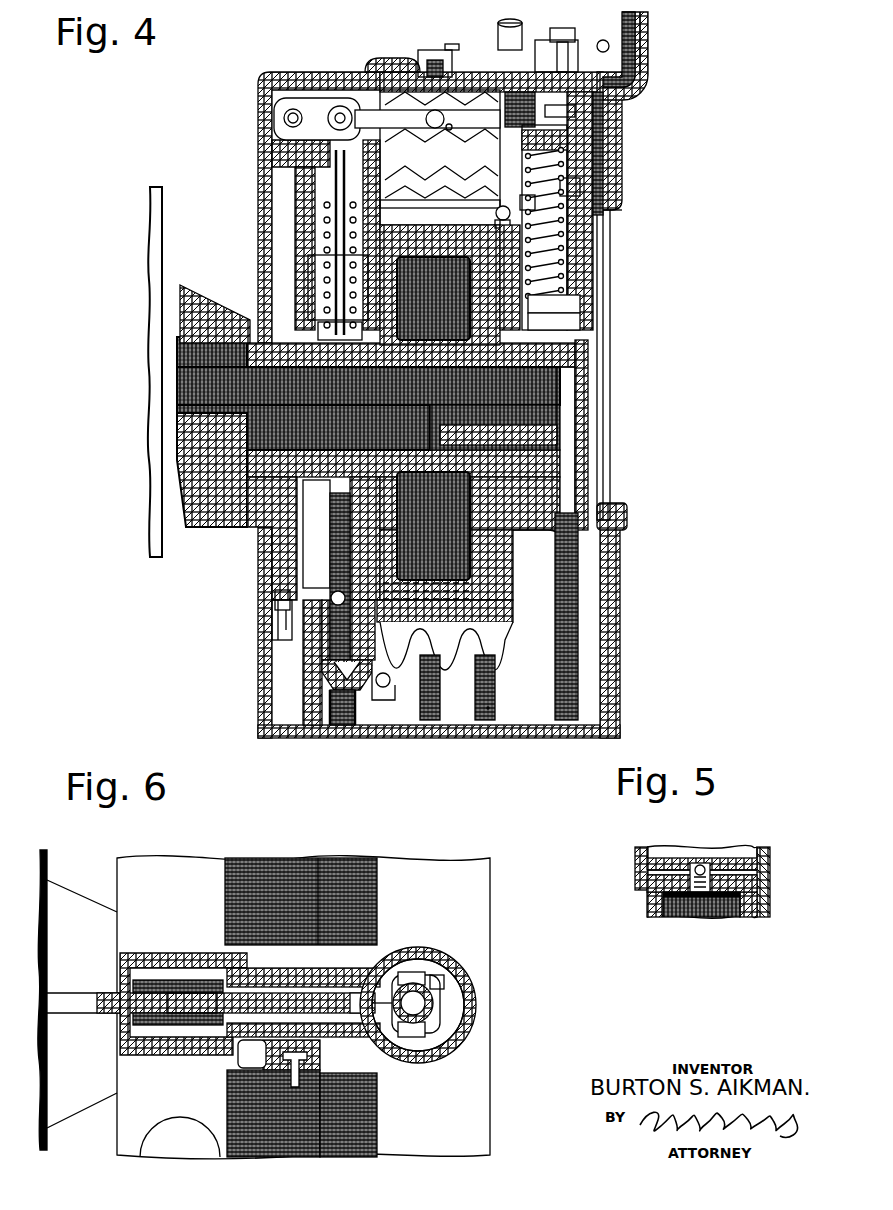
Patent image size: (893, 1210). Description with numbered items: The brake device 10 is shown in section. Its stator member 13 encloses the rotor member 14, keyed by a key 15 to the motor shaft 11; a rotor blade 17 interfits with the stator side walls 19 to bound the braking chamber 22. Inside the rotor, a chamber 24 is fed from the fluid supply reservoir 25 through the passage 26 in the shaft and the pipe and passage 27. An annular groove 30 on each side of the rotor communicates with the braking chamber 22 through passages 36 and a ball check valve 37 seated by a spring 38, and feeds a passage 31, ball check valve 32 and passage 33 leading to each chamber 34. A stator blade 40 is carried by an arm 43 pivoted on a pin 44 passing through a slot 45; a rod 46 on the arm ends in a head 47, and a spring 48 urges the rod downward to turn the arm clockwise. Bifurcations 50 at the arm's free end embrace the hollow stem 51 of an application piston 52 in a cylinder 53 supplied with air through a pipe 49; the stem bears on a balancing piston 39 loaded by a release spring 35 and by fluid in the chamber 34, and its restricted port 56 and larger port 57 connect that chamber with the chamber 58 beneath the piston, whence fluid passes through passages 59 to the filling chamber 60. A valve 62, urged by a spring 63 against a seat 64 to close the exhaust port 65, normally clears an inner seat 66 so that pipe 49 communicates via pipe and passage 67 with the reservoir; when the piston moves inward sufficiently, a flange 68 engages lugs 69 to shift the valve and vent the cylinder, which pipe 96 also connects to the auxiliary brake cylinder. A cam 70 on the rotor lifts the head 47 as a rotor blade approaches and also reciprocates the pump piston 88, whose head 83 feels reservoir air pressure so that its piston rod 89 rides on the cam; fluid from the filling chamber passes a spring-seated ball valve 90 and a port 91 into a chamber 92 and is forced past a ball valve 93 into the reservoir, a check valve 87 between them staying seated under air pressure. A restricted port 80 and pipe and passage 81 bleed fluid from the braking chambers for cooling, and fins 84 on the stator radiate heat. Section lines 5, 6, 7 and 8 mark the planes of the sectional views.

In FIG. 4, the brake device 10 is at (622, 643).
In FIG. 4, the shaft 11 is at (237, 400).
In FIG. 5, the stator member 13 is at (760, 850).
In FIG. 5, the rotor member 14 is at (745, 922).
In FIG. 4, the key 15 is at (437, 372).
In FIG. 4, the rotor blade 17 is at (390, 194).
In FIG. 4, the side walls 19 is at (390, 176).
In FIG. 5, the braking chamber 22 is at (660, 850).
In FIG. 4, the rotor chamber 24 is at (452, 508).
In FIG. 5, the rotor chamber 24 is at (697, 903).
In FIG. 4, the fluid supply reservoir 25 is at (488, 708).
In FIG. 4, the passage 26 is at (532, 418).
In FIG. 4, the pipe and passage 27 is at (597, 507).
In FIG. 4, the annular groove 30 is at (382, 233).
In FIG. 5, the annular groove 30 is at (647, 872).
In FIG. 4, the passage 31 is at (556, 268).
In FIG. 4, the ball check valve 32 is at (497, 219).
In FIG. 4, the passage 33 is at (531, 306).
In FIG. 4, the chamber 34 is at (565, 318).
In FIG. 4, the release spring 35 is at (520, 250).
In FIG. 5, the passages 36 is at (722, 870).
In FIG. 5, the ball check valve 37 is at (690, 883).
In FIG. 5, the spring 38 is at (697, 895).
In FIG. 4, the balancing piston 39 is at (580, 188).
In FIG. 6, the balancing piston 39 is at (440, 980).
In FIG. 4, the stator blade 40 is at (452, 36).
In FIG. 6, the stator blade 40 is at (366, 1030).
In FIG. 4, the arm 43 is at (387, 118).
In FIG. 6, the arm 43 is at (258, 985).
In FIG. 4, the pin 44 is at (293, 109).
In FIG. 4, the slot 45 is at (330, 108).
In FIG. 4, the rod 46 is at (272, 152).
In FIG. 6, the rod 46 is at (197, 1038).
In FIG. 4, the head 47 is at (322, 328).
In FIG. 4, the spring 48 is at (320, 207).
In FIG. 4, the pipe 49 is at (458, 44).
In FIG. 4, the bifurcations 50 is at (548, 152).
In FIG. 6, the bifurcations 50 is at (433, 1003).
In FIG. 4, the hollow stem 51 is at (575, 112).
In FIG. 6, the hollow stem 51 is at (392, 1024).
In FIG. 4, the application piston 52 is at (585, 95).
In FIG. 6, the cylinder 53 is at (436, 947).
In FIG. 4, the restricted port 56 is at (437, 128).
In FIG. 4, the larger port 57 is at (527, 202).
In FIG. 4, the chamber 58 is at (580, 135).
In FIG. 6, the chamber 58 is at (448, 1032).
In FIG. 6, the passages 59 is at (275, 985).
In FIG. 4, the filling chamber 60 is at (313, 270).
In FIG. 4, the valve 62 is at (648, 16).
In FIG. 4, the spring 63 is at (601, 100).
In FIG. 4, the seat 64 is at (553, 60).
In FIG. 4, the exhaust port 65 is at (552, 42).
In FIG. 4, the inner seat 66 is at (506, 23).
In FIG. 4, the pipe and passage 67 is at (650, 40).
In FIG. 4, the flange 68 is at (503, 90).
In FIG. 4, the lugs 69 is at (609, 46).
In FIG. 4, the cam 70 is at (337, 528).
In FIG. 4, the restricted port 80 is at (408, 57).
In FIG. 6, the pipe and passage 81 is at (277, 1088).
In FIG. 4, the head 83 is at (340, 712).
In FIG. 4, the fins 84 is at (430, 662).
In FIG. 6, the fins 84 is at (247, 860).
In FIG. 4, the check valve 87 is at (280, 602).
In FIG. 4, the piston 88 is at (328, 650).
In FIG. 4, the piston rod 89 is at (282, 535).
In FIG. 4, the ball valve 90 is at (325, 588).
In FIG. 4, the port 91 is at (340, 686).
In FIG. 4, the chamber 92 is at (330, 700).
In FIG. 4, the ball valve 93 is at (383, 690).
In FIG. 4, the pipe 96 is at (653, 50).
In FIG. 4, the section line 5— 5 is at (622, 213).
In FIG. 4, the section line 6— 6 is at (255, 90).
In FIG. 4, the section line 7— 7 is at (312, 760).
In FIG. 4, the section line 8— 8 is at (520, 765).